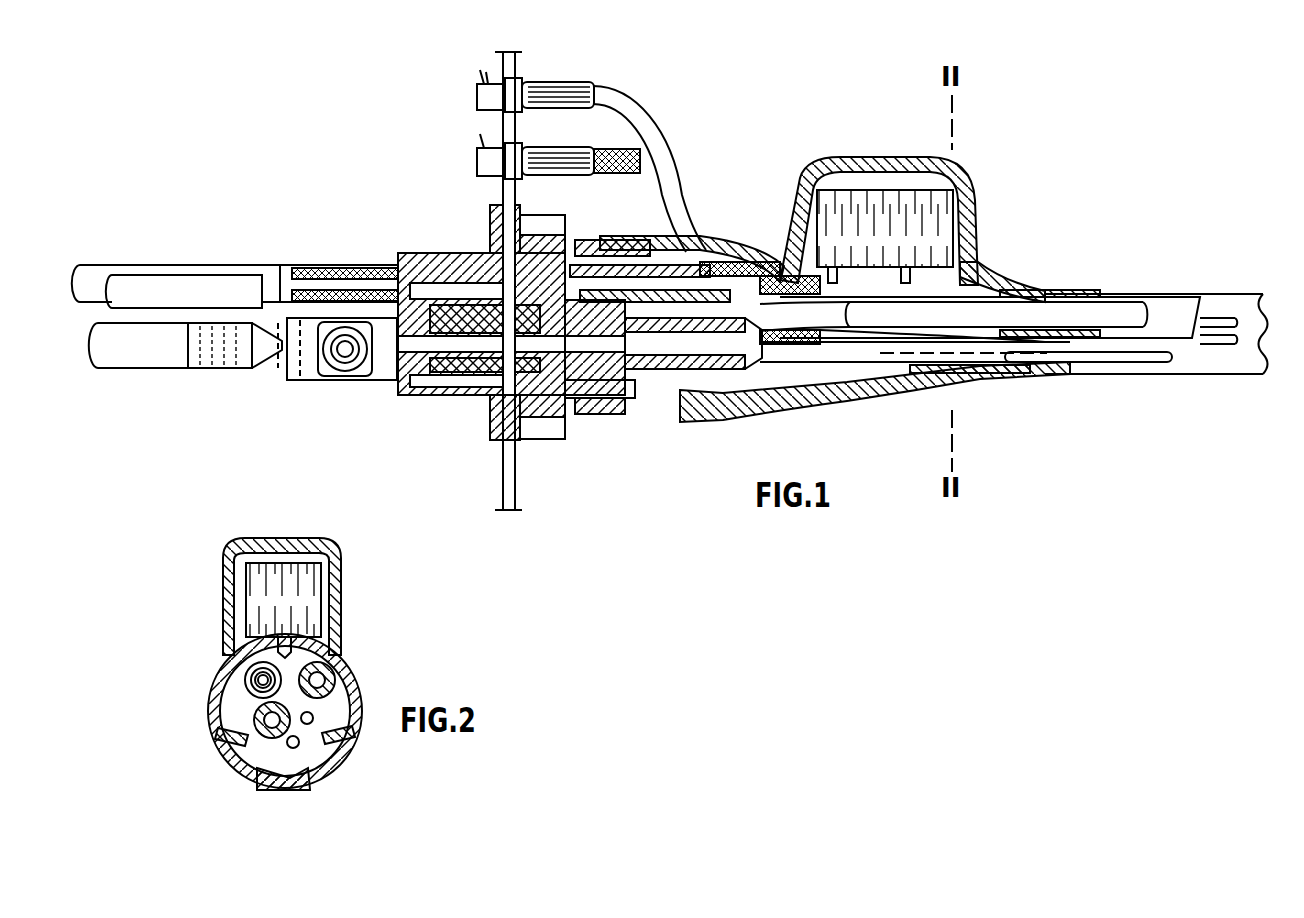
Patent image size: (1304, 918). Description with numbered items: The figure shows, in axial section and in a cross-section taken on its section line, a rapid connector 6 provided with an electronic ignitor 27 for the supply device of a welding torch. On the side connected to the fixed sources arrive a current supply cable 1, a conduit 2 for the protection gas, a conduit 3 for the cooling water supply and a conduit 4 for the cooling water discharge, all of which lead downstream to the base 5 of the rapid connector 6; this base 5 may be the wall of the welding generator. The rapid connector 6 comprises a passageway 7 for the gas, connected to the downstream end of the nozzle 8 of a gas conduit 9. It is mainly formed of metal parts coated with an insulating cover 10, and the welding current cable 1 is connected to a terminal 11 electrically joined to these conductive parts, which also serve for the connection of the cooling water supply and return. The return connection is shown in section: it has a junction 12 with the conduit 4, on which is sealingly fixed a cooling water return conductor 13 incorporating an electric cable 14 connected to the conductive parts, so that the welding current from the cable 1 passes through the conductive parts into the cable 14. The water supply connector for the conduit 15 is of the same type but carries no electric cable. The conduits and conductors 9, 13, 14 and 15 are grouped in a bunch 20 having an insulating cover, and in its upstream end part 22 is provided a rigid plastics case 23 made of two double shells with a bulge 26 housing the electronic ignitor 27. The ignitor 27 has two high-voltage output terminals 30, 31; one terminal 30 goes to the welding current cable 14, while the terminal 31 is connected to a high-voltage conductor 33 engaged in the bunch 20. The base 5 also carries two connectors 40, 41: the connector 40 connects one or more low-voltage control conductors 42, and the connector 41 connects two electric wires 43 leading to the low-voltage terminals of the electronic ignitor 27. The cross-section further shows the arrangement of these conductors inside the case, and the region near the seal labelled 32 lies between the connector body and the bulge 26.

In FIG. 1, the current supply cable 1 is at (218, 350).
In FIG. 1, the conduit for protection gas 2 is at (148, 355).
In FIG. 1, the conduit for cooling water supply 3 is at (238, 283).
In FIG. 1, the conduit for cooling water discharge 4 is at (272, 280).
In FIG. 1, the base of the rapid connector 5 is at (490, 415).
In FIG. 1, the rapid connector 6 is at (555, 473).
In FIG. 1, the passageway for the gas 7 is at (600, 395).
In FIG. 1, the nozzle of the gas conduit 8 is at (700, 372).
In FIG. 1, the gas conduit 9 is at (765, 348).
In FIG. 2, the gas conduit 9 is at (265, 736).
In FIG. 1, the insulating cover 10 is at (478, 255).
In FIG. 1, the terminal 11 is at (334, 372).
In FIG. 1, the junction 12 is at (628, 270).
In FIG. 1, the cooling water return conductor 13 is at (1150, 297).
In FIG. 2, the cooling water return conductor 13 is at (258, 674).
In FIG. 1, the electric cable 14 is at (817, 330).
In FIG. 2, the electric cable 14 is at (250, 674).
In FIG. 1, the conduit for water supply 15 is at (1085, 302).
In FIG. 2, the conduit for water supply 15 is at (332, 676).
In FIG. 1, the bunch 20 is at (1243, 388).
In FIG. 2, the upstream end part 22 is at (210, 712).
In FIG. 1, the rigid plastics case 23 is at (636, 412).
In FIG. 1, the bulge 26 is at (900, 156).
In FIG. 2, the bulge 26 is at (320, 550).
In FIG. 1, the electronic ignitor 27 is at (935, 215).
In FIG. 2, the electronic ignitor 27 is at (300, 595).
In FIG. 1, the high-voltage output terminal 30 is at (815, 282).
In FIG. 1, the high-voltage output terminal 31 is at (976, 270).
In FIG. 1, the seal 32 is at (775, 264).
In FIG. 1, the high-voltage conductor 33 is at (1140, 362).
In FIG. 2, the high-voltage conductor 33 is at (300, 745).
In FIG. 1, the connector 40 is at (565, 84).
In FIG. 1, the connector 41 is at (555, 150).
In FIG. 1, the low-voltage control conductors 42 is at (642, 122).
In FIG. 2, the low-voltage control conductors 42 is at (313, 716).
In FIG. 1, the electric wires 43 is at (640, 152).